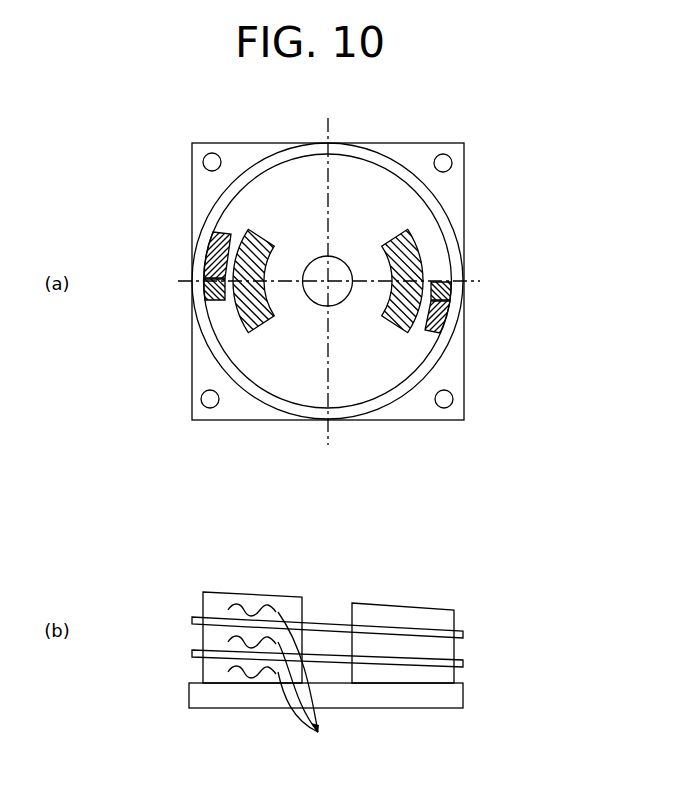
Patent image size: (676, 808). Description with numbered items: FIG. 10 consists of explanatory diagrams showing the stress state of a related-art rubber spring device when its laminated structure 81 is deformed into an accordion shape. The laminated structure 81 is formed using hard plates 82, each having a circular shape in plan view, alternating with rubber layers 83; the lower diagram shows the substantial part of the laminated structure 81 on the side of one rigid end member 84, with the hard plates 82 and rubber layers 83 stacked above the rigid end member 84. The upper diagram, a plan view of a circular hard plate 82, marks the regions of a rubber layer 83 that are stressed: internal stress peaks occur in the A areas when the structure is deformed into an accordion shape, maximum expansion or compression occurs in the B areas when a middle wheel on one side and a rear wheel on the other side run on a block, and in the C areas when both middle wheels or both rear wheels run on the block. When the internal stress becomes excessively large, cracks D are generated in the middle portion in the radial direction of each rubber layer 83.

The laminated structure 81 is at (203, 559).
The hard plate 82 is at (398, 171).
The rubber layer 83 is at (356, 192).
The rigid end member 84 is at (455, 374).
The A areas A is at (403, 265).
The B areas B is at (212, 253).
The C areas C is at (212, 291).
The cracks D is at (307, 683).